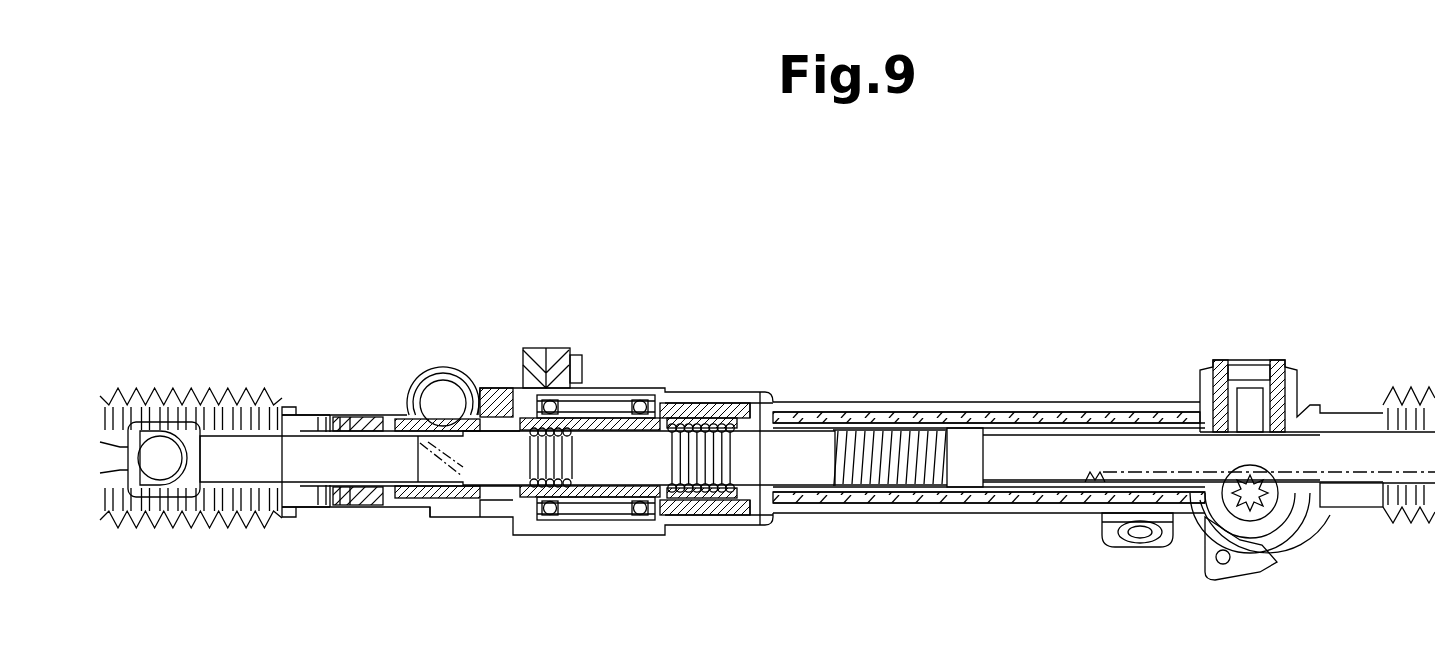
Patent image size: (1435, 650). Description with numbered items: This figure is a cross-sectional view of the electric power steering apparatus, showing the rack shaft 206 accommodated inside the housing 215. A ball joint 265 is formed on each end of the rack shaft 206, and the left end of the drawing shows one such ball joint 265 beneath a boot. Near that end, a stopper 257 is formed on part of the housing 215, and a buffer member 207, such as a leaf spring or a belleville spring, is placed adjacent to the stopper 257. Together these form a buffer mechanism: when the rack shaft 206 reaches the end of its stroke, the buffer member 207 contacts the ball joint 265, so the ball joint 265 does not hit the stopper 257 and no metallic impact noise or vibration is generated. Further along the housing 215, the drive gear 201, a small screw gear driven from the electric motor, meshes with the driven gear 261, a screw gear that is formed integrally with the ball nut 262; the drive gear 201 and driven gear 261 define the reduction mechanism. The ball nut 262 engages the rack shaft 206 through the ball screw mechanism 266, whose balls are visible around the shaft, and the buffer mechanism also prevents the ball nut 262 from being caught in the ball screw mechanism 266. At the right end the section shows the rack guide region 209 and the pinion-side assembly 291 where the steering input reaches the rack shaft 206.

The drive gear 201 is at (452, 392).
The rack shaft 206 is at (1018, 447).
The buffer member 207 is at (340, 509).
The rack guide yoke 209 is at (1183, 550).
The housing 215 is at (428, 368).
The stopper 257 is at (345, 420).
The driven gear 261 is at (476, 402).
The ball nut 262 is at (690, 392).
The ball joint 265 is at (200, 392).
The ball screw mechanism 266 is at (690, 515).
The pinion 291 is at (1278, 560).